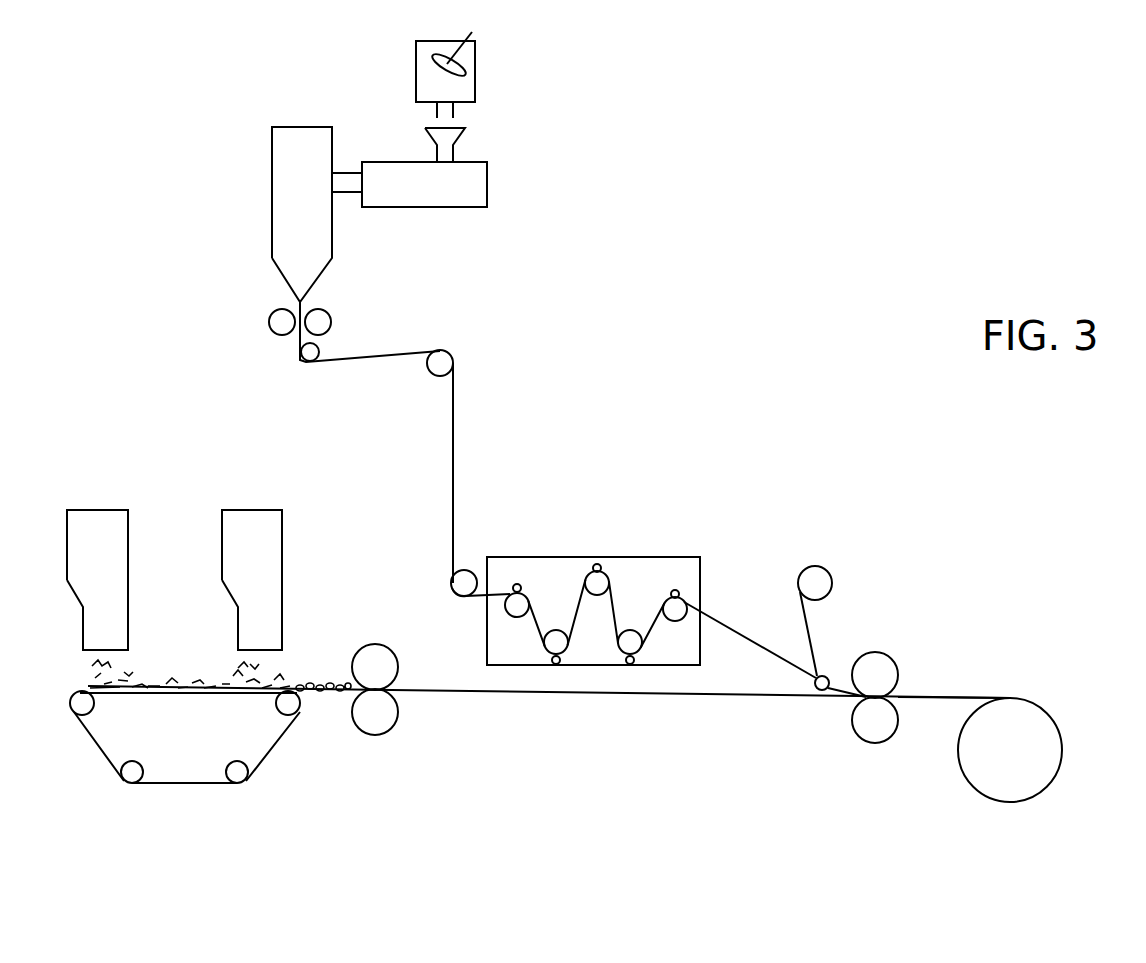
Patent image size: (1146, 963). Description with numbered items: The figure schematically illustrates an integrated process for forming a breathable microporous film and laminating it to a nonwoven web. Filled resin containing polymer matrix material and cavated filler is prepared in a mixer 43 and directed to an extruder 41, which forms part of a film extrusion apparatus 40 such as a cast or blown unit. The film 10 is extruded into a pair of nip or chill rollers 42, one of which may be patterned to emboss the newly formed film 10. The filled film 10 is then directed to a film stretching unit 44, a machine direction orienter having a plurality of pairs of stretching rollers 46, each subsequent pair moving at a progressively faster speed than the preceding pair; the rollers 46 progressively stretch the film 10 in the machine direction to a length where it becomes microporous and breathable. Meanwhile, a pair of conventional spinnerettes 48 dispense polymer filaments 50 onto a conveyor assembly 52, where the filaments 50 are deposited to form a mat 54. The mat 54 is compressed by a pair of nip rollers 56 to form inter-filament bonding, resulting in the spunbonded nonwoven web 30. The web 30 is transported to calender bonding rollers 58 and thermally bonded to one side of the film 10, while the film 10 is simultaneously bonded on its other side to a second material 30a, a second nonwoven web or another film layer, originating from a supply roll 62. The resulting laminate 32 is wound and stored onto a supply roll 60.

The film 10 is at (372, 360).
The nonwoven web 30 is at (482, 693).
The second material 30a is at (803, 617).
The laminate 32 is at (967, 697).
The film extrusion apparatus 40 is at (298, 152).
The extruder 41 is at (477, 188).
The nip or chill rollers 42 is at (268, 308).
The mixer 43 is at (468, 86).
The film stretching unit 44 is at (626, 548).
The stretching rollers 46 is at (512, 587).
The spinnerettes 48 is at (93, 510).
The polymer filaments 50 is at (247, 680).
The conveyor assembly 52 is at (218, 787).
The mat 54 is at (327, 683).
The nip rollers 56 is at (382, 645).
The calender bonding rollers 58 is at (900, 667).
The supply roll 60 is at (1062, 730).
The supply roll 62 is at (830, 567).